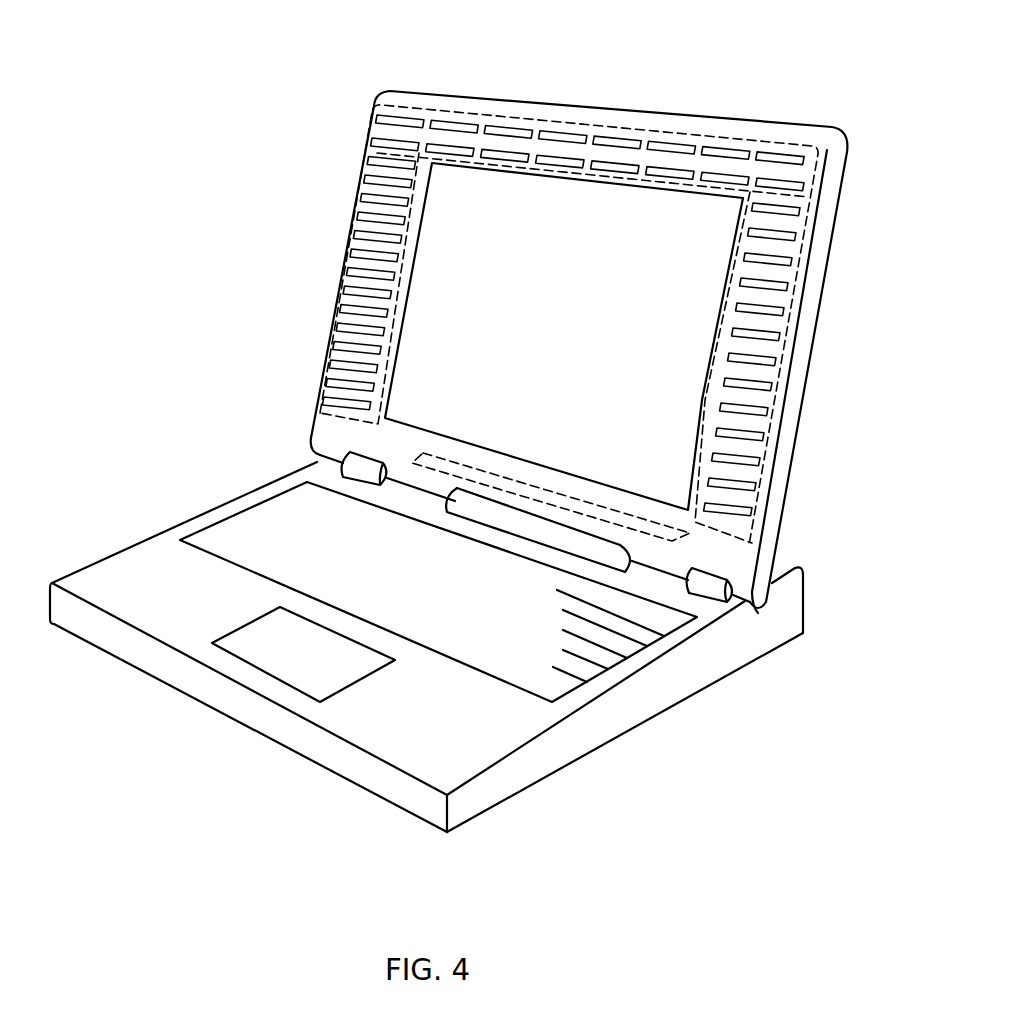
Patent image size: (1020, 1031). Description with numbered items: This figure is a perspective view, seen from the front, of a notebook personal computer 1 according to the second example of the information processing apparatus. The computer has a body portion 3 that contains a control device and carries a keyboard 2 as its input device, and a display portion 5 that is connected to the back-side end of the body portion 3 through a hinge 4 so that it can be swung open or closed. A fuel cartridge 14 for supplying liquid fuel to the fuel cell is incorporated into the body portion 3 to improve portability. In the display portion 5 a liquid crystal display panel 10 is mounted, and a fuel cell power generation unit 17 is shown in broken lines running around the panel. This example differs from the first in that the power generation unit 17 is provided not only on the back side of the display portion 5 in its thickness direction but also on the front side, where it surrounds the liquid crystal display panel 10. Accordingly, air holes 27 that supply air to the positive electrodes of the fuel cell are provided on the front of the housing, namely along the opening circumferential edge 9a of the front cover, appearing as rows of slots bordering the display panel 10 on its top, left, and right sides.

The notebook personal computer 1 is at (305, 77).
The keyboard 2 is at (528, 677).
The body portion 3 is at (619, 739).
The hinge 4 is at (355, 472).
The display portion 5 is at (483, 88).
The opening circumferential edge 9a is at (356, 247).
The liquid crystal display panel 10 is at (570, 293).
The fuel cartridge 14 is at (549, 490).
The power generation unit 17 is at (621, 118).
The air holes 27 is at (358, 238).